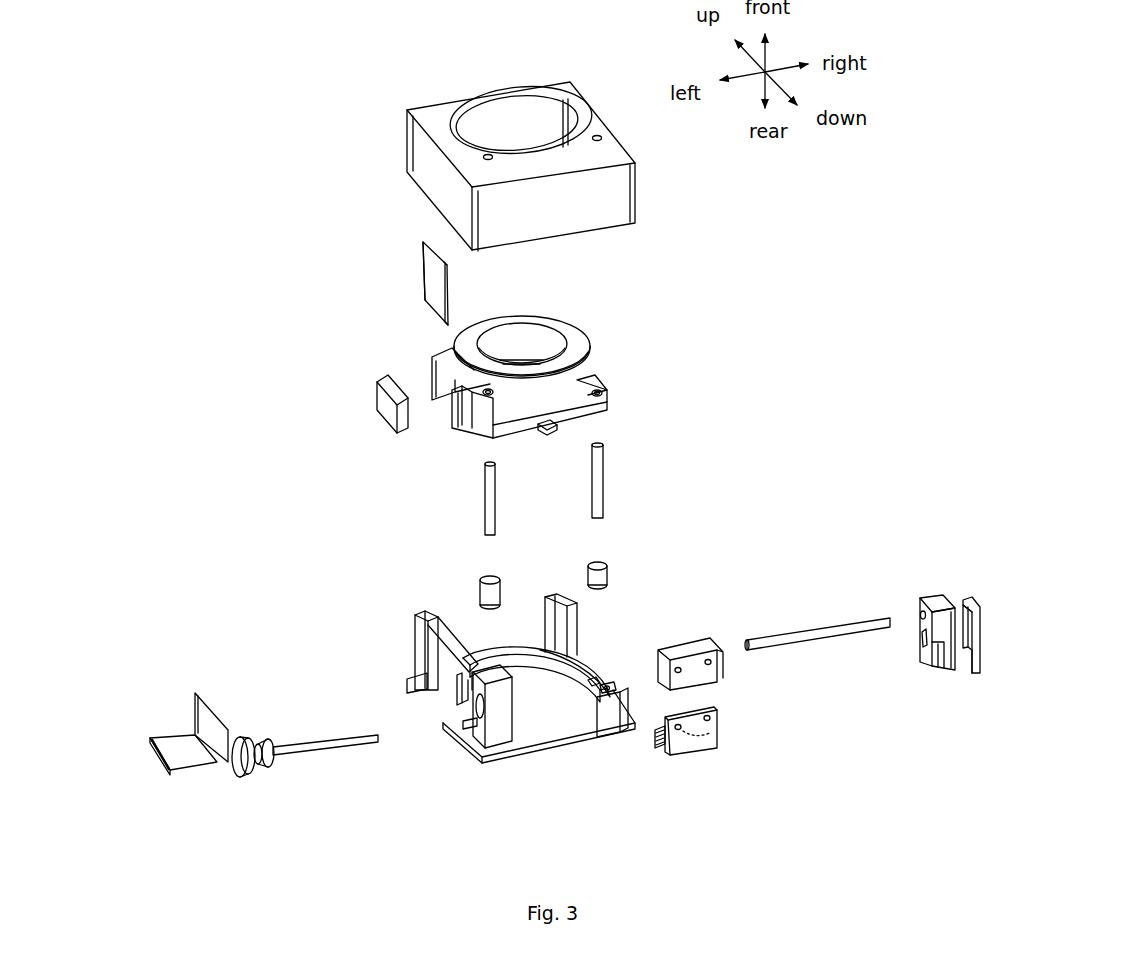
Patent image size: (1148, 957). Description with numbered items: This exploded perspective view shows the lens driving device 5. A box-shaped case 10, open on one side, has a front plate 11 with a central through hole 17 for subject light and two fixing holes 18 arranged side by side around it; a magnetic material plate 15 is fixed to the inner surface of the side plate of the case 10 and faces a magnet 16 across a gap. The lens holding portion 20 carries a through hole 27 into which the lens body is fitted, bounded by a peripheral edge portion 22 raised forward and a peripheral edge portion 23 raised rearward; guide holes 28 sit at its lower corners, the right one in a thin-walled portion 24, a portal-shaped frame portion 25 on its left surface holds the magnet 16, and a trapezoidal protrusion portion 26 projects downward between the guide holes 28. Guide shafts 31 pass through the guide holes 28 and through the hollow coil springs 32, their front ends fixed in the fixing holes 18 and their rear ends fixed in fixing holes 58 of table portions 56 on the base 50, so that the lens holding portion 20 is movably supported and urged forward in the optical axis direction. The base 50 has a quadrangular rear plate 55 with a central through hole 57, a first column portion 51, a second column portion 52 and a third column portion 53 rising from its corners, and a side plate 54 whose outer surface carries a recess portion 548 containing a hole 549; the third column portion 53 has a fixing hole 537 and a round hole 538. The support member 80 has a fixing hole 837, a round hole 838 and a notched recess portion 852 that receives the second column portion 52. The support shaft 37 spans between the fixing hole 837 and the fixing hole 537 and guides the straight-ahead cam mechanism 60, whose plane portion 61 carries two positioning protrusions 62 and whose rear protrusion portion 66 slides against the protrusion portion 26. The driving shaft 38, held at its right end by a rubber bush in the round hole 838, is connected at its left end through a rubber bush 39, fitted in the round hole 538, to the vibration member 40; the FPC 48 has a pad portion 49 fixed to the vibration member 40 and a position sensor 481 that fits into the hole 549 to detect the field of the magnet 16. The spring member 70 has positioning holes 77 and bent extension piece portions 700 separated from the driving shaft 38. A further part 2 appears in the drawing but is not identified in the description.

The lens driving device 5 is at (318, 82).
The case 10 is at (546, 139).
The front plate 11 is at (445, 112).
The through hole 17 is at (517, 110).
The fixing holes 18 is at (483, 158).
The magnetic material plate 15 is at (432, 283).
The magnet 16 is at (380, 403).
The lens holding portion 20 is at (521, 382).
The peripheral edge portion 22 is at (473, 340).
The through hole 27 is at (522, 342).
The guide hole 28 is at (445, 372).
The frame portion 25 is at (440, 383).
The thin-walled portion 24 is at (600, 382).
The peripheral edge portion 23 is at (575, 420).
The protrusion portion 26 is at (547, 438).
The guide shaft 31 is at (485, 498).
The coil spring 32 is at (478, 590).
The base 50 is at (501, 685).
The rear plate 55 is at (545, 750).
The third column portion 53 is at (498, 745).
The first column portion 51 is at (563, 597).
The through hole 57 is at (532, 668).
The side plate 54 is at (422, 648).
The hole 549 is at (430, 668).
The recess portion 548 is at (420, 685).
The fixing hole 537 is at (458, 703).
The round hole 538 is at (468, 740).
The second column portion 52 is at (607, 740).
The fixing hole 58 is at (598, 682).
The table portion 56 is at (612, 690).
The FPC 48 is at (233, 715).
The position sensor 481 is at (212, 703).
The pad portion 49 is at (227, 770).
The vibration member 40 is at (243, 742).
The rubber bush 39 is at (267, 768).
The driving shaft 38 is at (308, 742).
The support shaft 37 is at (805, 628).
The straight-ahead cam mechanism 60 is at (716, 654).
The plane portion 61 is at (700, 663).
The positioning protrusions 62 is at (683, 670).
The protrusion portion 66 is at (660, 688).
The spring member 70 is at (687, 769).
The positioning holes 77 is at (705, 733).
The extension piece portions 700 is at (660, 744).
The support member 80 is at (902, 627).
The fixing hole 837 is at (920, 616).
The round hole 838 is at (920, 645).
The recess portion 852 is at (941, 662).
The plate 2 is at (971, 662).